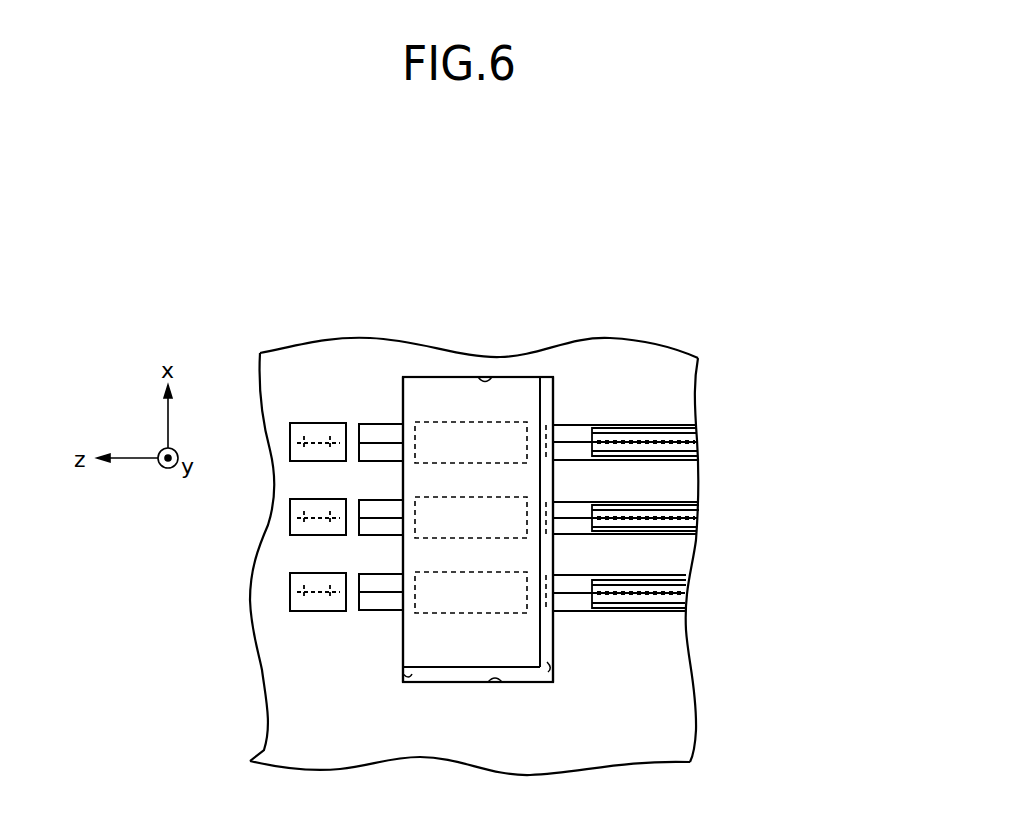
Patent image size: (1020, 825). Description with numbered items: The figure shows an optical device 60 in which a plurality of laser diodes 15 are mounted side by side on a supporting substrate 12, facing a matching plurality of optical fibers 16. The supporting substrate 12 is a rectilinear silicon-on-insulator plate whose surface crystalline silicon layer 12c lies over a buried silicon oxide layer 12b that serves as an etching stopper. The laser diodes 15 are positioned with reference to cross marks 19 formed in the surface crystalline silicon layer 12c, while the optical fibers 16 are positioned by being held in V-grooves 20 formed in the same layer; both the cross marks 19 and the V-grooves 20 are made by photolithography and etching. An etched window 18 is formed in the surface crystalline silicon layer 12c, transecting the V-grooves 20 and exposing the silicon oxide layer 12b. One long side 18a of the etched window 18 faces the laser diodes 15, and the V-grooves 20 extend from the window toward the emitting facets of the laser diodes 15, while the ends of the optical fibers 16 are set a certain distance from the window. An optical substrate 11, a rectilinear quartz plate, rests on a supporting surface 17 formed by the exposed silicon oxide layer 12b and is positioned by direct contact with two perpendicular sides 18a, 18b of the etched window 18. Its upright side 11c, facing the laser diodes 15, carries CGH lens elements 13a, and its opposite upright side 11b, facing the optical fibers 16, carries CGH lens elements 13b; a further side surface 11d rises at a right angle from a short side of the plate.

The optical device 60 is at (668, 262).
The supporting substrate 12 is at (676, 345).
The surface crystalline silicon layer 12c is at (704, 364).
The silicon oxide layer 12b is at (428, 682).
The optical substrate 11 is at (515, 372).
The upright side 11b is at (553, 380).
The upright side 11c is at (402, 380).
The side surface 11d is at (438, 377).
The CGH lens elements 13a is at (415, 424).
The CGH lens elements 13b is at (546, 425).
The laser diodes 15 is at (312, 424).
The optical fibers 16 is at (680, 434).
The supporting surface 17 is at (470, 683).
The etched window 18 is at (540, 683).
The long side of etched window 18a is at (402, 680).
The side of etched window 18b is at (486, 377).
The cross marks 19 is at (292, 440).
The V-grooves 20 is at (583, 427).